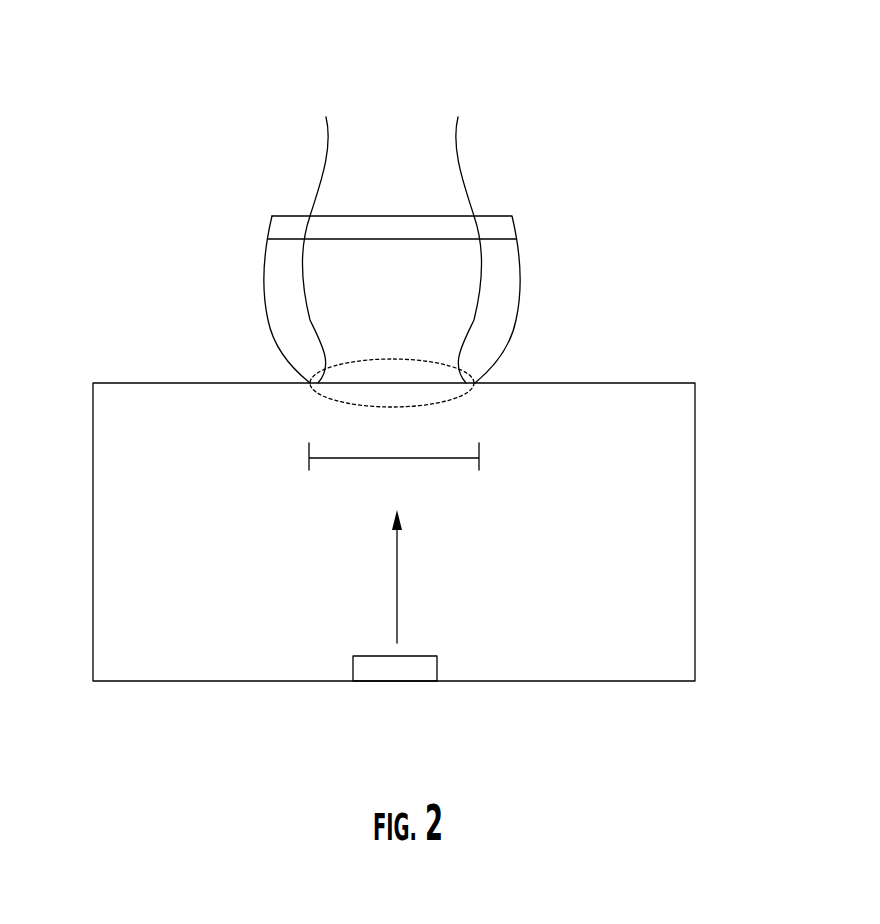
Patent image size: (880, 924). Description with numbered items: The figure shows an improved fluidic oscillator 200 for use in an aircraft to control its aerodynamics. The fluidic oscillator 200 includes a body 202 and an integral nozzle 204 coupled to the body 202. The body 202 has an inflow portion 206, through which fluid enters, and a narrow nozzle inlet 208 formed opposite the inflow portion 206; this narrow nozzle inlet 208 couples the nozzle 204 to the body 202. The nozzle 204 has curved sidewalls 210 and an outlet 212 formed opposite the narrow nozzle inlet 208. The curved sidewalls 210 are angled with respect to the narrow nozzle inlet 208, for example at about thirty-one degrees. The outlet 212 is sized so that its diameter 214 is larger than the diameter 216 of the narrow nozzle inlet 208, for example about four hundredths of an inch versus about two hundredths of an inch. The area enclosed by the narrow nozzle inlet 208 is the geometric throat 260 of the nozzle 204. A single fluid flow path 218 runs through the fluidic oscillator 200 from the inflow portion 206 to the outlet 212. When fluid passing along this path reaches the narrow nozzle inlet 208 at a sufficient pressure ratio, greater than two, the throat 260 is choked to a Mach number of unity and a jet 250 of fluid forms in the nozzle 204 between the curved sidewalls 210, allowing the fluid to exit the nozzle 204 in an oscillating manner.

The fluidic oscillator 200 is at (108, 112).
The body 202 is at (695, 457).
The nozzle 204 is at (273, 333).
The inflow portion 206 is at (397, 681).
The narrow nozzle inlet 208 is at (367, 405).
The curved sidewalls 210 is at (520, 263).
The outlet 212 is at (310, 216).
The diameter of the outlet 214 is at (285, 243).
The diameter of the narrow nozzle inlet 216 is at (375, 458).
The single fluid flow path 218 is at (397, 590).
The jet 250 is at (458, 163).
The geometric throat 260 is at (475, 328).